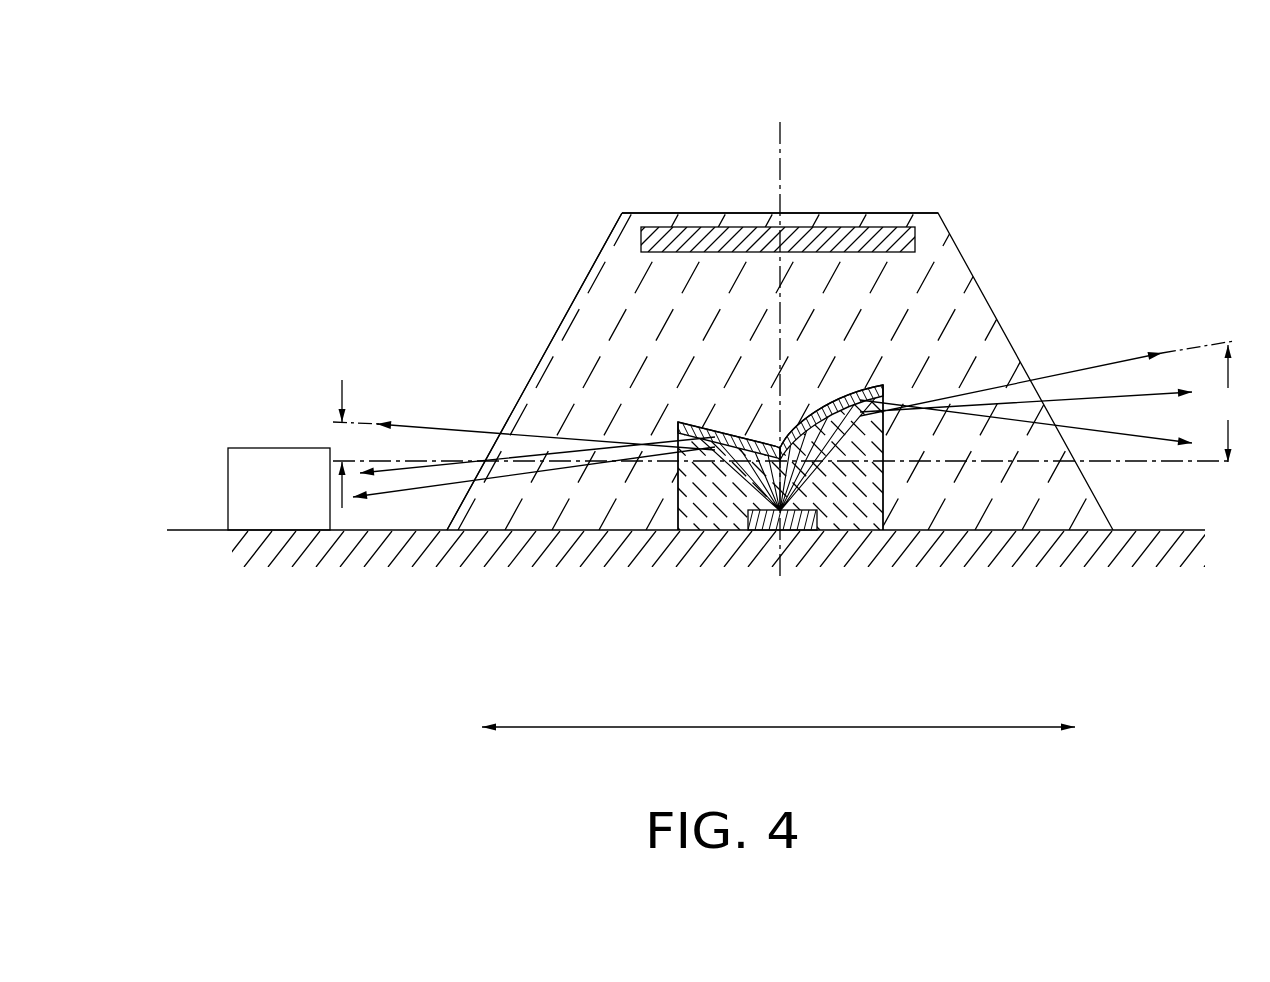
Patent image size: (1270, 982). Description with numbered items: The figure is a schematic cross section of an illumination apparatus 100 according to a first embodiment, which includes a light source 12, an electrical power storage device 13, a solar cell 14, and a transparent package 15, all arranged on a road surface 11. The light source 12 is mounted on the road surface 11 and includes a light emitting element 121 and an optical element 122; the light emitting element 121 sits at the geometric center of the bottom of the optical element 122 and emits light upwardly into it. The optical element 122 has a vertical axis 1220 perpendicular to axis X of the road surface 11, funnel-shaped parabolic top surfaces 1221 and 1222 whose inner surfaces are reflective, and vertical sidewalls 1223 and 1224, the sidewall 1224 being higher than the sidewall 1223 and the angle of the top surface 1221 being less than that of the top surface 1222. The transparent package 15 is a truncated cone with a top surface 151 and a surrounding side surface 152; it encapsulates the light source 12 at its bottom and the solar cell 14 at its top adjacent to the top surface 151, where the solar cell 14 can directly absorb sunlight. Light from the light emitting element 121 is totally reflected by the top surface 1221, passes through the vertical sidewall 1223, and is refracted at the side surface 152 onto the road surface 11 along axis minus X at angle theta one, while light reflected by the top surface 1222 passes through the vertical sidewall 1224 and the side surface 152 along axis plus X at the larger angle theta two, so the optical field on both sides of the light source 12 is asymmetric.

The illumination apparatus 100 is at (693, 398).
The road surface 11 is at (1146, 526).
The light source 12 is at (753, 482).
The light emitting element 121 is at (802, 583).
The optical element 122 is at (753, 455).
The vertical axis 1220 is at (783, 135).
The top surface 1221 is at (700, 414).
The top surface 1222 is at (841, 382).
The vertical sidewall 1223 is at (668, 496).
The vertical sidewall 1224 is at (894, 484).
The electrical power storage device 13 is at (258, 495).
The solar cell 14 is at (843, 232).
The transparent package 15 is at (756, 332).
The top surface 151 is at (700, 213).
The side surface 152 is at (627, 300).